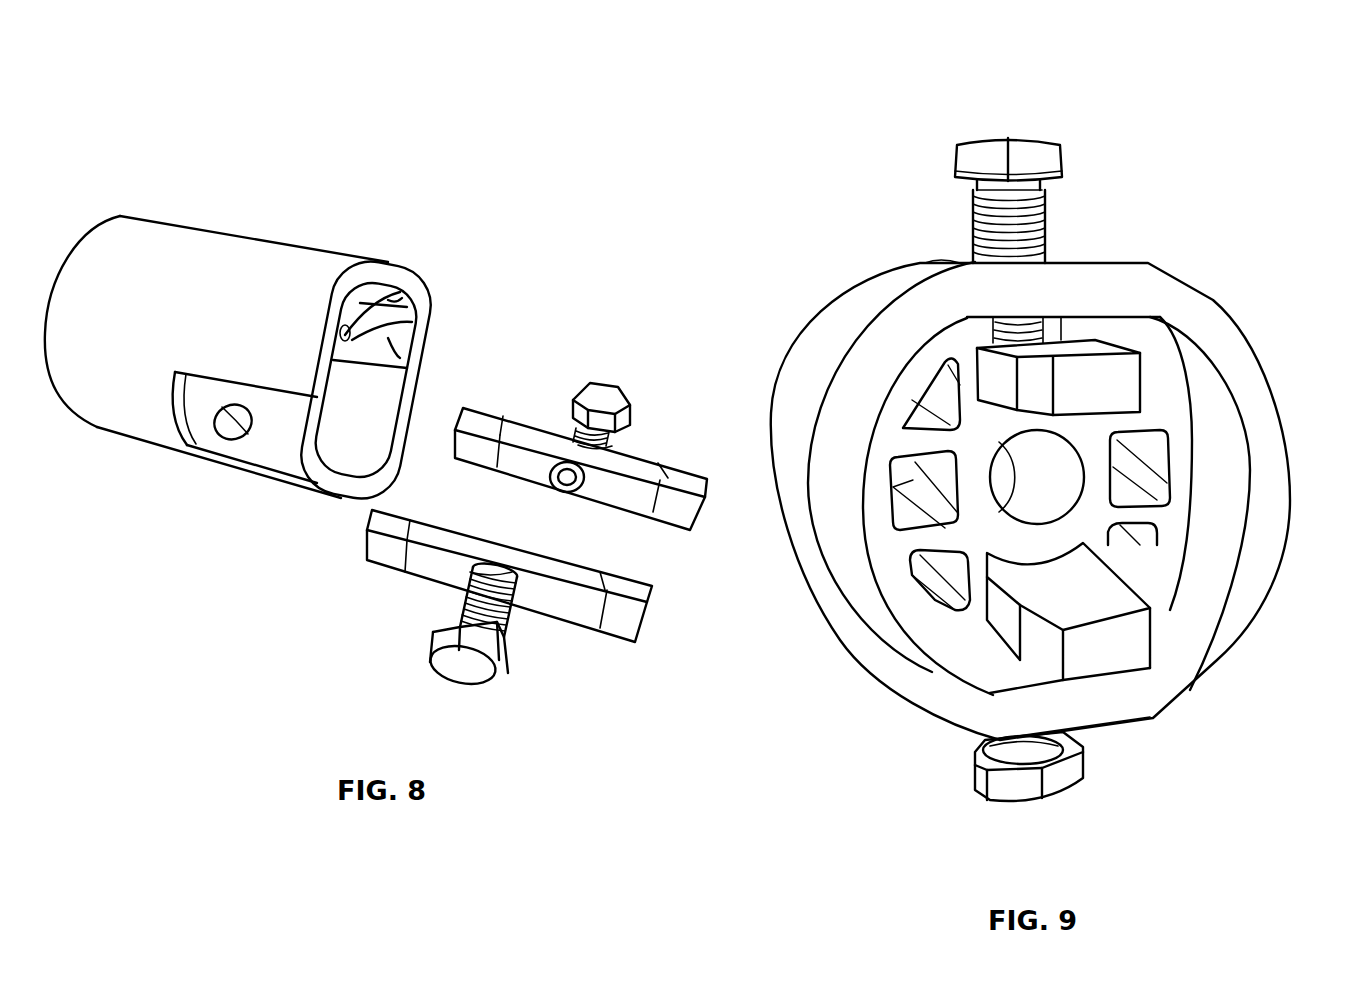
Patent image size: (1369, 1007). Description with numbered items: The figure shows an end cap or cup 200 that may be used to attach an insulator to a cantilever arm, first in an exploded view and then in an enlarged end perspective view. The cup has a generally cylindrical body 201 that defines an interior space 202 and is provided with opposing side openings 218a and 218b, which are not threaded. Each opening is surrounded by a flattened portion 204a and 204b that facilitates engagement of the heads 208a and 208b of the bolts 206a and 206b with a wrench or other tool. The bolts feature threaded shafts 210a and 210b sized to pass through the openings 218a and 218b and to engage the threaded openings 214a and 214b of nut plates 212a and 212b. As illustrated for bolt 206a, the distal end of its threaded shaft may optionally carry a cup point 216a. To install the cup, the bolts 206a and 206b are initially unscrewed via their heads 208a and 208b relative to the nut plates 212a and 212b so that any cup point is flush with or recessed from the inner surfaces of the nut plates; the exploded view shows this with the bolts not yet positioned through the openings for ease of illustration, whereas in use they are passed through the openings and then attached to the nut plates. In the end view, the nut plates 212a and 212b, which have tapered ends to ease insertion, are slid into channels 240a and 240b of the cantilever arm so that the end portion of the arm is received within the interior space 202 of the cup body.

In FIG. 8, the end cup 200 is at (174, 110).
In FIG. 9, the end cup 200 is at (1256, 121).
In FIG. 8, the cylindrical body 201 is at (235, 296).
In FIG. 9, the cylindrical body 201 is at (1213, 300).
In FIG. 8, the interior space 202 is at (400, 357).
In FIG. 9, the interior space 202 is at (1215, 552).
In FIG. 8, the flattened portion 204a is at (290, 447).
In FIG. 9, the flattened portion 204a is at (1100, 262).
In FIG. 8, the flattened portion 204b is at (415, 325).
In FIG. 9, the flattened portion 204b is at (1143, 722).
In FIG. 8, the bolt 206a is at (446, 686).
In FIG. 9, the bolt 206a is at (932, 178).
In FIG. 8, the bolt 206b is at (612, 378).
In FIG. 9, the bolt 206b is at (1037, 814).
In FIG. 8, the head 208a is at (473, 680).
In FIG. 9, the head 208a is at (1030, 138).
In FIG. 8, the head 208b is at (628, 408).
In FIG. 9, the head 208b is at (1015, 788).
In FIG. 8, the threaded shaft 210a is at (462, 595).
In FIG. 9, the threaded shaft 210a is at (973, 215).
In FIG. 8, the threaded shaft 210b is at (570, 420).
In FIG. 9, the threaded shaft 210b is at (985, 750).
In FIG. 8, the nut plate 212a is at (640, 623).
In FIG. 8, the nut plate 212b is at (700, 518).
In FIG. 8, the threaded opening 214a is at (515, 583).
In FIG. 8, the threaded opening 214b is at (600, 462).
In FIG. 8, the cup point 216a is at (576, 495).
In FIG. 8, the side opening 218a is at (236, 440).
In FIG. 8, the side opening 218b is at (400, 300).
In FIG. 9, the channel 240a is at (980, 405).
In FIG. 9, the channel 240b is at (1118, 560).